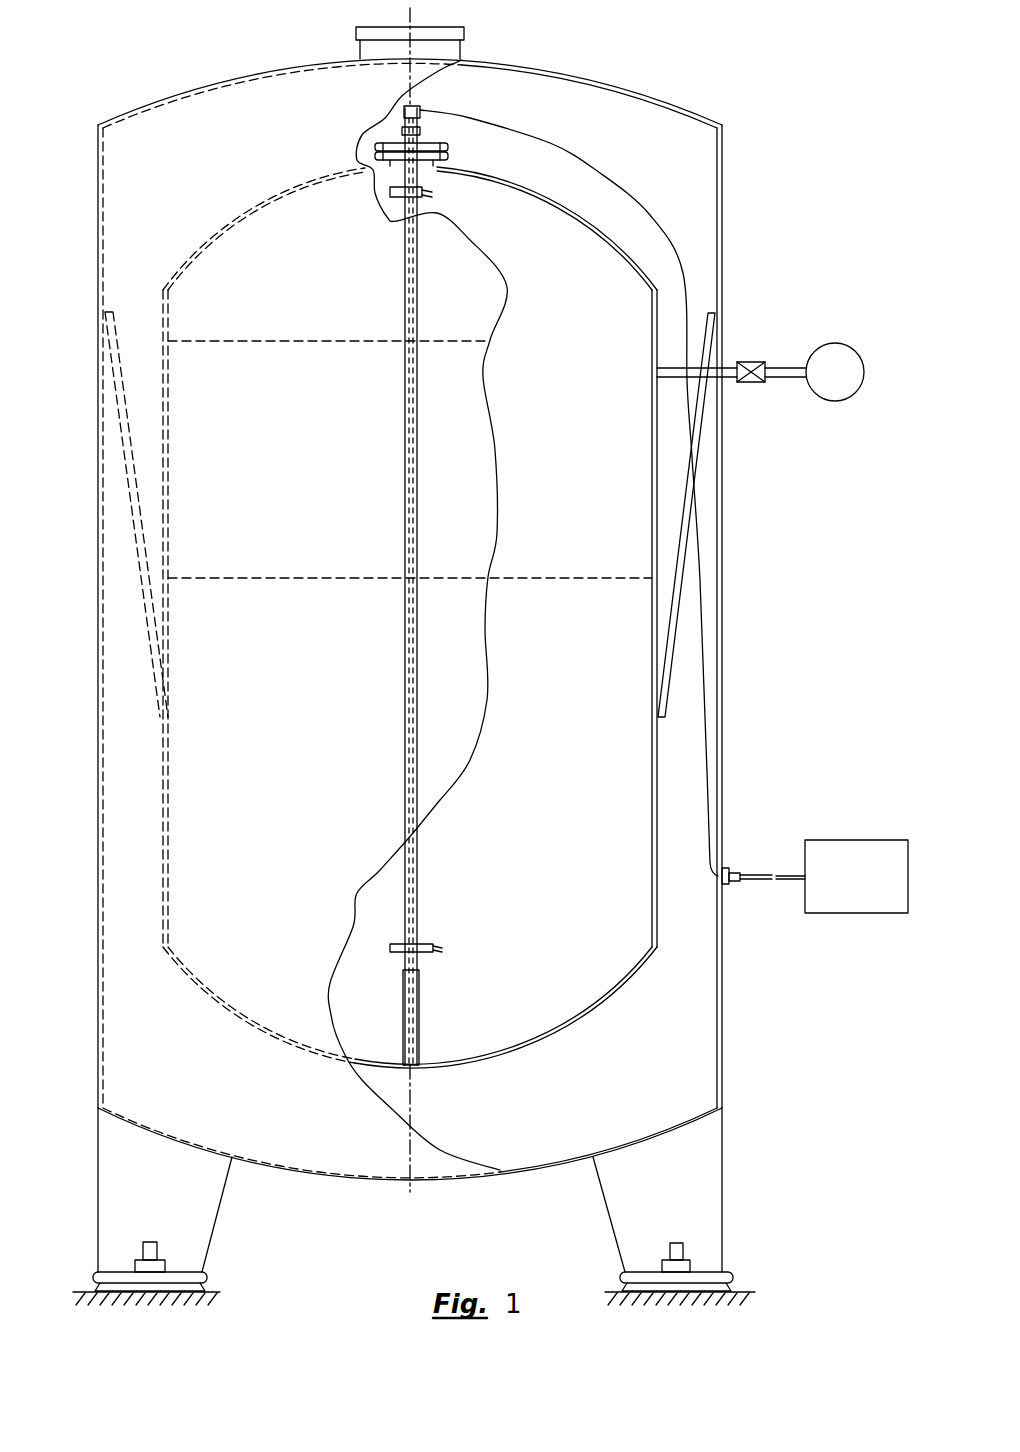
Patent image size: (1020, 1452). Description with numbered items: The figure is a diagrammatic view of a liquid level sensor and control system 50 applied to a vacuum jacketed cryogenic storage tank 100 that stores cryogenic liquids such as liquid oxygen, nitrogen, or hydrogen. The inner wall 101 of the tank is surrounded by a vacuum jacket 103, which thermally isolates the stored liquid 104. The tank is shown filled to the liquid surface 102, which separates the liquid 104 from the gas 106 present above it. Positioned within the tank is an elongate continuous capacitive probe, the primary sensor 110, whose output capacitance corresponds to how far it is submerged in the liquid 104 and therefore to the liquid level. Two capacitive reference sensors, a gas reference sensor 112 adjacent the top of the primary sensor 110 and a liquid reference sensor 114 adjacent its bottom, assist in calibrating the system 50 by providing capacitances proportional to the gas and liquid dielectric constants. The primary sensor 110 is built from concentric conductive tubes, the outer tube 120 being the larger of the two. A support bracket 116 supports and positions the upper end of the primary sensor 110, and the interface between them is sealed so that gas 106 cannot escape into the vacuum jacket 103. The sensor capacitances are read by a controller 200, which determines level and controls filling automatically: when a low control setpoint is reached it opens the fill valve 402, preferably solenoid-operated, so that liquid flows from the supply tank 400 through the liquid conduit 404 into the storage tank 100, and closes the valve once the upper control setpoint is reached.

The liquid level sensor and control system 50 is at (780, 270).
The vacuum jacketed cryogenic storage tank 100 is at (658, 100).
The inner wall 101 is at (202, 255).
The liquid surface 102 is at (244, 578).
The vacuum jacket 103 is at (163, 258).
The liquid 104 is at (305, 762).
The gas 106 is at (315, 482).
The primary sensor 110 is at (390, 543).
The gas reference sensor 112 is at (393, 196).
The liquid reference sensor 114 is at (393, 951).
The support bracket 116 is at (360, 136).
The outer tube 120 is at (568, 153).
The controller 200 is at (834, 891).
The supply tank 400 is at (813, 386).
The fill valve 402 is at (748, 362).
The liquid conduit 404 is at (776, 380).